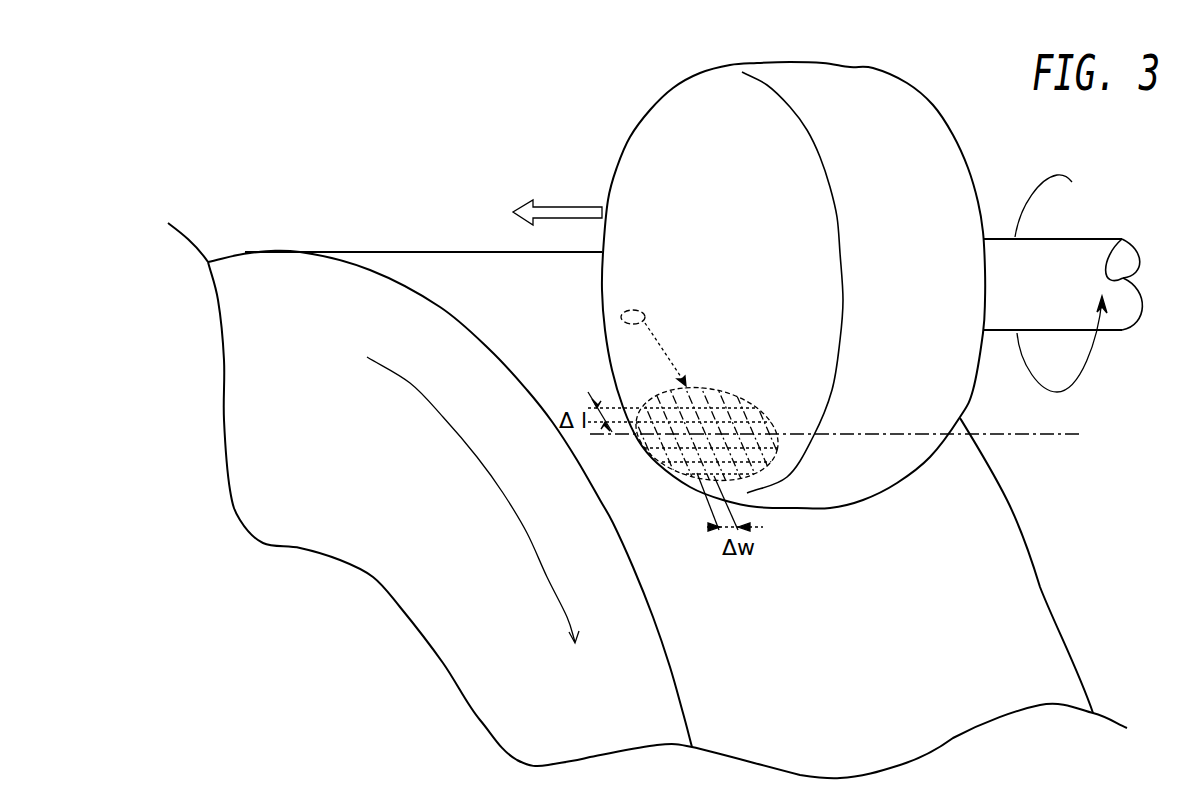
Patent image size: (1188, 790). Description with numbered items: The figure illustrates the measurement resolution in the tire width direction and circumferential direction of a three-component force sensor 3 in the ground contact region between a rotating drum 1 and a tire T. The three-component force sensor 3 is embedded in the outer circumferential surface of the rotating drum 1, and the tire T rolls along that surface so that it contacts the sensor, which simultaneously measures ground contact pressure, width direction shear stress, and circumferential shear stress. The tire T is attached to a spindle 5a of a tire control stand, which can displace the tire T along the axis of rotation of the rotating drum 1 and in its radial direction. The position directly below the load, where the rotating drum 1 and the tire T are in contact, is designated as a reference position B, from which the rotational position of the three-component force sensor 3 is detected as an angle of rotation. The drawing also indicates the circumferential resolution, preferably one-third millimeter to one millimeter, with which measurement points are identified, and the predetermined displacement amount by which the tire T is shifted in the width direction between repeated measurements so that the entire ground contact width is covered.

The rotating drum 1 is at (469, 264).
The tire T is at (645, 115).
The spindle 5a is at (1082, 245).
The three-component force sensor 3 is at (621, 318).
The reference position B is at (847, 435).